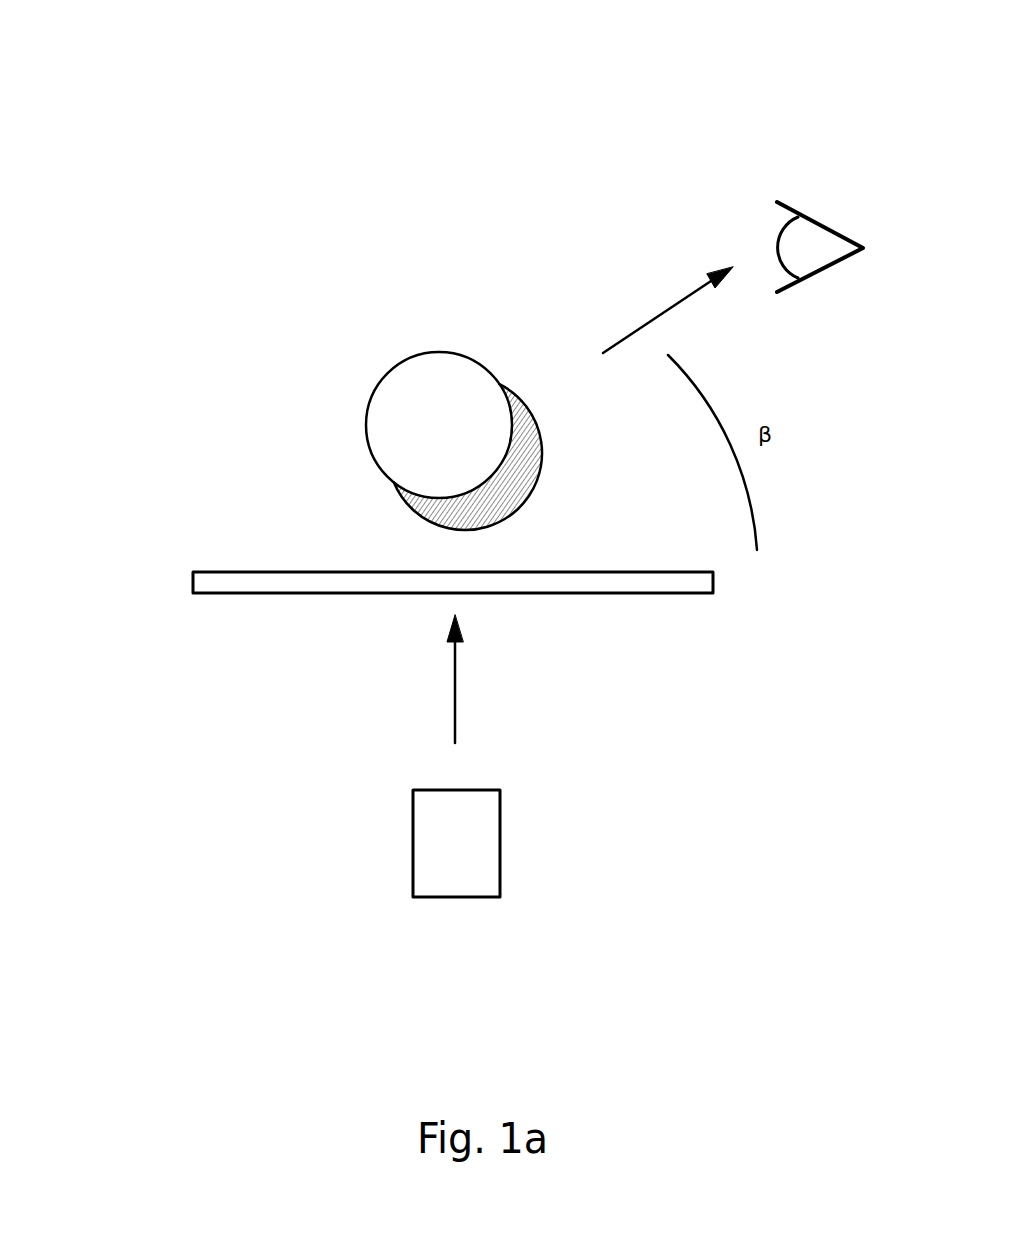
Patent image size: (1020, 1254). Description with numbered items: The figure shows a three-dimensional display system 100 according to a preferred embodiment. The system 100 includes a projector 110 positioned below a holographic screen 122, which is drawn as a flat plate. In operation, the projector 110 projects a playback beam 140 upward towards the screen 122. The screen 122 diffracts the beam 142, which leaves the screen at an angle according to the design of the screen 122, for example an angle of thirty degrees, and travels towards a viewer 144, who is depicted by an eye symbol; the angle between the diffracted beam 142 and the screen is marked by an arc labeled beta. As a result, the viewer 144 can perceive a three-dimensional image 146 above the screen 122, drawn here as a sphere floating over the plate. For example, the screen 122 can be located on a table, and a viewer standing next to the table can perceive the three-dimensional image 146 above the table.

The three-dimensional display system 100 is at (473, 95).
The projector 110 is at (435, 898).
The holographic screen 122 is at (193, 595).
The playback beam 140 is at (458, 715).
The diffracted beam 142 is at (648, 322).
The viewer 144 is at (842, 230).
The 3-D image 146 is at (383, 378).